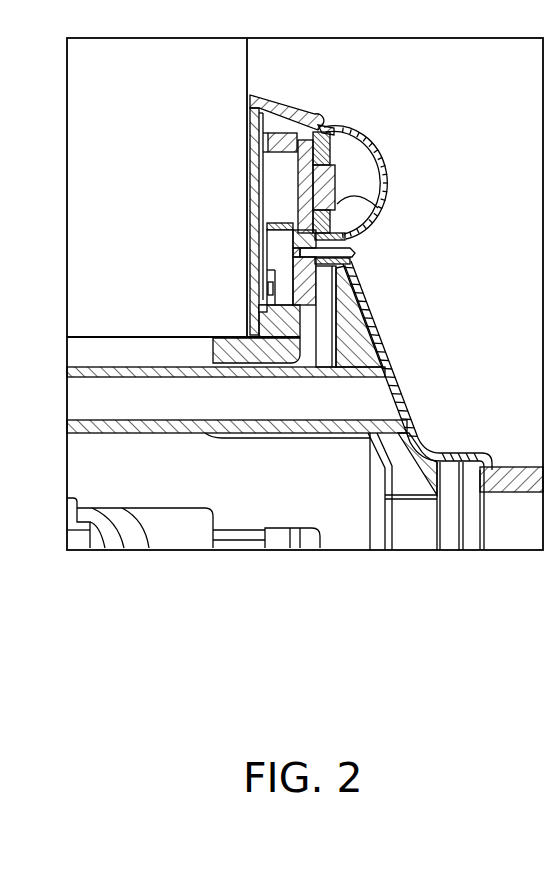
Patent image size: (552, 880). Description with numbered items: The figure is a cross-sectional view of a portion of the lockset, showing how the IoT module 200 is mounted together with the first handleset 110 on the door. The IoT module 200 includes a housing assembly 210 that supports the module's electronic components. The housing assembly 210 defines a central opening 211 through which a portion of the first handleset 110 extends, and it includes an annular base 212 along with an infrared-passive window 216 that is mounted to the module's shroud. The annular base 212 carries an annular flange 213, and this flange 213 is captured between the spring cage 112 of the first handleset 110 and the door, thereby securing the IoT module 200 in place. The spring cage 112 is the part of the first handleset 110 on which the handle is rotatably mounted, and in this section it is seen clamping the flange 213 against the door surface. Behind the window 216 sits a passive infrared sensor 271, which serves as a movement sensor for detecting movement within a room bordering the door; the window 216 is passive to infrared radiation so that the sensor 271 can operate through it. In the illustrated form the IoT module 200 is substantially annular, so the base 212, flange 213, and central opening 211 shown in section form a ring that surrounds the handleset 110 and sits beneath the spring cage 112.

The IoT module 200 is at (200, 146).
The housing assembly 210 is at (344, 108).
The infrared-passive window 216 is at (381, 165).
The passive infrared sensor 271 is at (378, 208).
The annular base 212 is at (280, 261).
The annular flange 213 is at (350, 263).
The central opening 211 is at (315, 355).
The spring cage 112 is at (403, 353).
The first handleset 110 is at (478, 438).